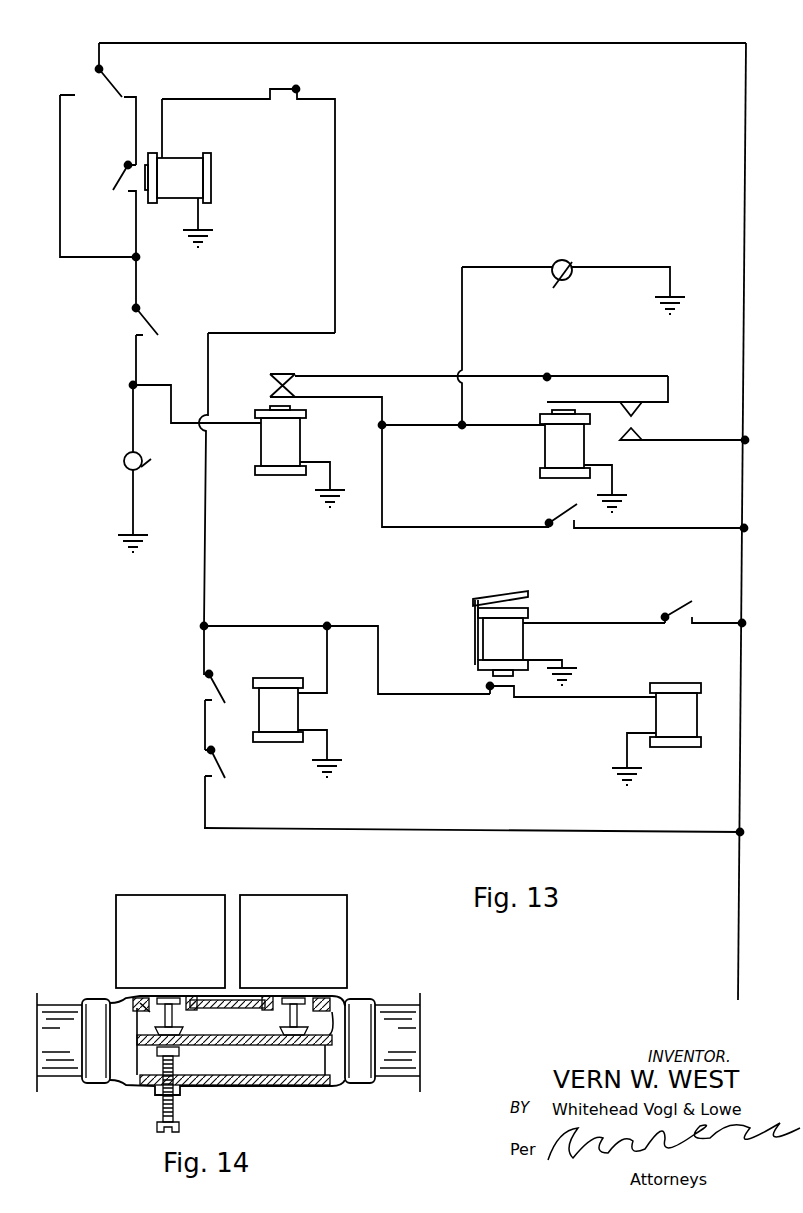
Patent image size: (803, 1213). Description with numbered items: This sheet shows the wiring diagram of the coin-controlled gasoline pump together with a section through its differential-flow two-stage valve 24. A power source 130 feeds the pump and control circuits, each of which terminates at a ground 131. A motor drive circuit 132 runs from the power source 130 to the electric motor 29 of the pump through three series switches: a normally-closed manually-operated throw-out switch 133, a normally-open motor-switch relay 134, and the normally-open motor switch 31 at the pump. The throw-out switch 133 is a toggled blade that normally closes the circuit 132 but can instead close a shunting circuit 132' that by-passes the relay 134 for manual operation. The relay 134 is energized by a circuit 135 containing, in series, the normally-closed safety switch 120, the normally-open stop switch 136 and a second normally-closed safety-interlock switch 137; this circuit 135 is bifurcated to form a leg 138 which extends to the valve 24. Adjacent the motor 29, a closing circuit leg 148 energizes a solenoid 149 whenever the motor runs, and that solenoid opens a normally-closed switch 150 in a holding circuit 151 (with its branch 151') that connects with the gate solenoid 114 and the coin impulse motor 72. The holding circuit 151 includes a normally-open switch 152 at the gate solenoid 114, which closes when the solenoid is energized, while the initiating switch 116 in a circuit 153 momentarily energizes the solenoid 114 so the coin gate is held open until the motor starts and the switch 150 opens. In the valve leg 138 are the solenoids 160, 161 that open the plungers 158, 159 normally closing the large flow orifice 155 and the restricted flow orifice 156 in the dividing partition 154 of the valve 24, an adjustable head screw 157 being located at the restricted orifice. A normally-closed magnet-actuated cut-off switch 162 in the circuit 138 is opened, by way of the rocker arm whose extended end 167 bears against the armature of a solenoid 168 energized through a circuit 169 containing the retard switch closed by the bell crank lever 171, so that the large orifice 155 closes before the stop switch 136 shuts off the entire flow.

In FIG. 13, the power source 130 is at (745, 136).
In FIG. 13, the ground 131 is at (218, 236).
In FIG. 13, the motor drive circuit 132 is at (403, 167).
In FIG. 13, the shunting circuit 132' is at (77, 202).
In FIG. 13, the throw-out switch 133 is at (97, 80).
In FIG. 13, the motor-switch relay 134 is at (190, 184).
In FIG. 13, the safety-interlock switch 137 is at (296, 88).
In FIG. 13, the motor switch 31 is at (142, 320).
In FIG. 13, the electric motor 29 is at (127, 455).
In FIG. 13, the closing circuit leg 148 is at (166, 423).
In FIG. 13, the solenoid 149 is at (258, 457).
In FIG. 13, the normally-closed switch 150 is at (286, 382).
In FIG. 13, the holding circuit 151 is at (481, 368).
In FIG. 13, the holding circuit branch 151' is at (682, 432).
In FIG. 13, the normally-open switch 152 is at (462, 316).
In FIG. 13, the coin impulse motor 72 is at (570, 260).
In FIG. 13, the gate solenoid 114 is at (560, 451).
In FIG. 13, the circuit 153 is at (448, 527).
In FIG. 13, the initiating switch 116 is at (558, 506).
In FIG. 13, the valve circuit leg 138 is at (293, 626).
In FIG. 13, the stop switch 136 is at (212, 676).
In FIG. 13, the safety switch 120 is at (216, 776).
In FIG. 13, the solenoid 161 is at (270, 716).
In FIG. 14, the solenoid 161 is at (130, 920).
In FIG. 13, the relay-energizing circuit 135 is at (468, 832).
In FIG. 13, the extended end of rocker arm 167 is at (482, 595).
In FIG. 13, the solenoid 168 is at (496, 644).
In FIG. 13, the bell crank lever 171 is at (683, 605).
In FIG. 13, the circuit 169 is at (736, 600).
In FIG. 13, the cut-off switch 162 is at (504, 696).
In FIG. 13, the solenoid 160 is at (678, 720).
In FIG. 14, the solenoid 160 is at (332, 938).
In FIG. 14, the two-stage valve 24 is at (404, 1064).
In FIG. 14, the dividing partition 154 is at (230, 1044).
In FIG. 14, the large flow orifice 155 is at (290, 1044).
In FIG. 14, the restricted flow orifice 156 is at (174, 1040).
In FIG. 14, the adjustable head screw 157 is at (173, 1100).
In FIG. 14, the plunger 158 is at (322, 1012).
In FIG. 14, the plunger 159 is at (140, 1012).